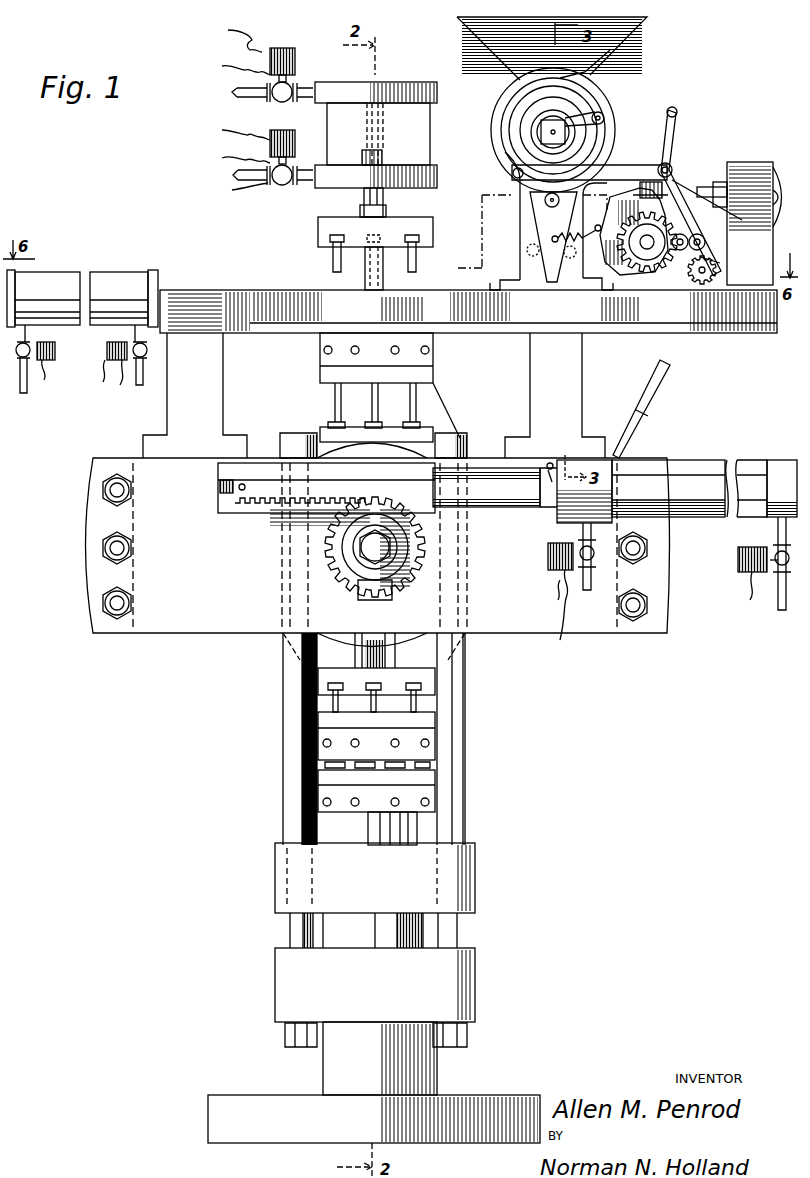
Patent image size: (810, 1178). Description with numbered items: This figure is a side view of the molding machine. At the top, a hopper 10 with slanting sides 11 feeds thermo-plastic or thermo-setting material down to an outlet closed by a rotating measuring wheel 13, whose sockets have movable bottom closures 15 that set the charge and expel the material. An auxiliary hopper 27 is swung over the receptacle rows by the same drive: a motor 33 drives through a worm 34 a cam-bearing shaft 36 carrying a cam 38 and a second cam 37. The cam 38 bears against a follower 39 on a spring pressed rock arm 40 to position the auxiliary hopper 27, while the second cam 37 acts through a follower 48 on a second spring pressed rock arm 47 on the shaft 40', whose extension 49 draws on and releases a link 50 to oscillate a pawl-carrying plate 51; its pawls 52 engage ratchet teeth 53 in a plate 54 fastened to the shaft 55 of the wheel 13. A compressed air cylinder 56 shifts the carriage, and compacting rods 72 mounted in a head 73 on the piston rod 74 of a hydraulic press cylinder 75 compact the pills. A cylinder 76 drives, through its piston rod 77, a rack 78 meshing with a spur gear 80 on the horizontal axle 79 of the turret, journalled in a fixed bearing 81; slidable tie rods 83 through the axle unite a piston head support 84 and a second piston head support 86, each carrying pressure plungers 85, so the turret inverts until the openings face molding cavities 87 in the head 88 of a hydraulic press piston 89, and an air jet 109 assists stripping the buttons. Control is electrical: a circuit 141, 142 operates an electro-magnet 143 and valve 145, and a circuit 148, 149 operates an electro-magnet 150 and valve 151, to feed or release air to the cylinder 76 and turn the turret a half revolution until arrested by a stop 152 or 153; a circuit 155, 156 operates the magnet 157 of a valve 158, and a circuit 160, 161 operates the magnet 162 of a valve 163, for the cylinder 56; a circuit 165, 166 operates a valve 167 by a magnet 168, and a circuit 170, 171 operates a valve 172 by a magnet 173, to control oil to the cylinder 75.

The hopper 10 is at (648, 27).
The slanting sides 11 is at (635, 45).
The measuring wheel 13 is at (520, 92).
The movable bottom closures 15 is at (535, 137).
The auxiliary hopper 27 is at (520, 224).
The motor 33 is at (745, 168).
The worm 34 is at (676, 160).
The cam-bearing shaft 36 is at (648, 262).
The second cam 37 is at (612, 258).
The cam 38 is at (645, 180).
The follower 39 is at (705, 250).
The spring pressed rock arm 40 is at (718, 240).
The shaft 40' is at (703, 287).
The second spring pressed rock arm 47 is at (712, 265).
The follower 48 is at (718, 218).
The extension 49 is at (692, 168).
The link 50 is at (612, 163).
The pawl-carrying plate 51 is at (585, 100).
The pawls 52 is at (604, 112).
The ratchet teeth 53 is at (518, 108).
The plate 54 is at (528, 122).
The shaft 55 is at (537, 148).
The compressed air cylinder 56 is at (65, 272).
The compacting rods 72 is at (412, 254).
The head 73 is at (330, 233).
The piston rod 74 is at (363, 199).
The cylinder 75 is at (376, 135).
The cylinder 76 is at (690, 475).
The piston rod 77 is at (480, 465).
The rack 78 is at (255, 488).
The horizontal axle 79 is at (375, 547).
The spur gear 80 is at (340, 575).
The fixed bearing 81 is at (220, 633).
The tie rods 83 is at (370, 656).
The piston head support 84 is at (433, 420).
The pressure plungers 85 is at (420, 712).
The second piston head support 86 is at (440, 680).
The molding cavities 87 is at (435, 768).
The head 88 is at (435, 793).
The hydraulic press piston 89 is at (418, 833).
The air jet 109 is at (660, 390).
The circuit 141 is at (740, 590).
The circuit 142 is at (752, 603).
The electro-magnet 143 is at (752, 535).
The valve 145 is at (784, 612).
The circuit 148 is at (557, 602).
The circuit 149 is at (580, 616).
The electro-magnet 150 is at (548, 575).
The valve 151 is at (596, 572).
The stop 152 is at (218, 487).
The stop 153 is at (545, 500).
The circuit 155 is at (120, 388).
The circuit 156 is at (103, 385).
The valve 157 is at (128, 346).
The valve 158 is at (146, 370).
The circuit 160 is at (52, 378).
The circuit 161 is at (38, 388).
The solenoid valve 162 is at (56, 352).
The valve 163 is at (32, 348).
The circuit 165 is at (227, 38).
The circuit 166 is at (226, 67).
The valve 167 is at (265, 97).
The magnet 168 is at (300, 58).
The circuit 170 is at (227, 132).
The circuit 171 is at (228, 159).
The valve 172 is at (254, 182).
The magnet 173 is at (298, 140).